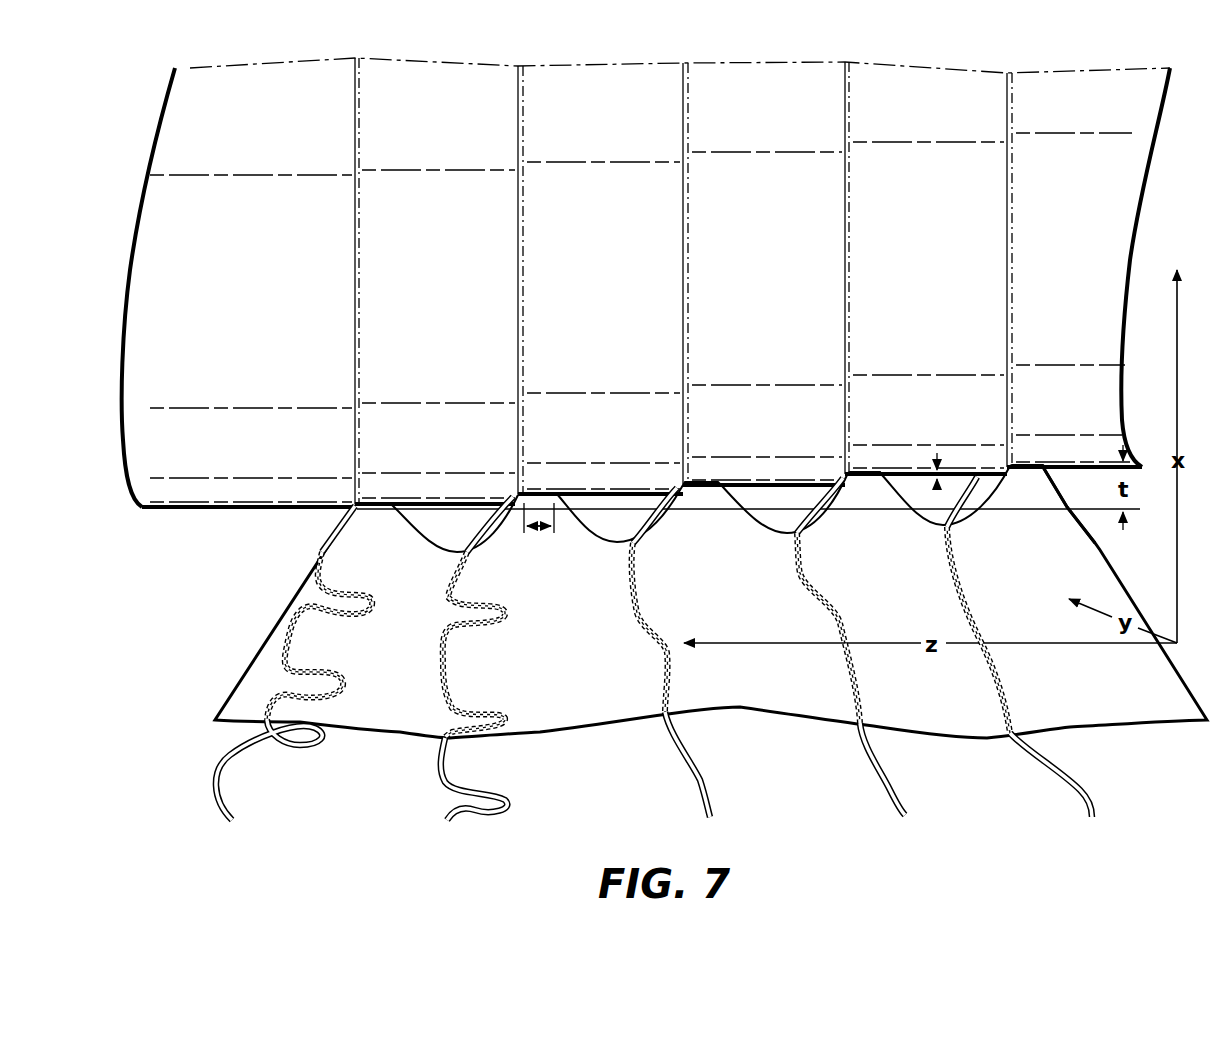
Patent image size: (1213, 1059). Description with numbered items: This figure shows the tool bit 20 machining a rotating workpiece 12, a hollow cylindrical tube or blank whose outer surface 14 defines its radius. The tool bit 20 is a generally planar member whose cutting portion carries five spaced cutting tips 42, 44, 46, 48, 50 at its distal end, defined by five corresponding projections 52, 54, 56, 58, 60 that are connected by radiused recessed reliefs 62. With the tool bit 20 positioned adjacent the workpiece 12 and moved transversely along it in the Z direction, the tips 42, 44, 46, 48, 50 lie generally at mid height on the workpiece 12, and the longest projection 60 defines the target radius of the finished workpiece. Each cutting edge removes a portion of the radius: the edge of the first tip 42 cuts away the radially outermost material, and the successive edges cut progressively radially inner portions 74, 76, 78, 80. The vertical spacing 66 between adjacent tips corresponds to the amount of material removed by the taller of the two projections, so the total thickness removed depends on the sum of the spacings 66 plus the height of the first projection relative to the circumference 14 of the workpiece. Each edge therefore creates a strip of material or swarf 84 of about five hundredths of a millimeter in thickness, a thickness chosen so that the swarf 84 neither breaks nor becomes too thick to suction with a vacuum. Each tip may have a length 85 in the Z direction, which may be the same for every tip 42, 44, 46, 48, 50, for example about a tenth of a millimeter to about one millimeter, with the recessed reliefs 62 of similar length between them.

The workpiece 12 is at (646, 304).
The outer surface 14 is at (217, 513).
The tool bit 20 is at (696, 570).
The first cutting tip 42 is at (383, 499).
The second cutting tip 44 is at (540, 492).
The third cutting tip 46 is at (707, 482).
The fourth cutting tip 48 is at (867, 472).
The fifth cutting tip 50 is at (1028, 463).
The first projection 52 is at (408, 540).
The second projection 54 is at (577, 538).
The third projection 56 is at (718, 500).
The fourth projection 58 is at (857, 493).
The longest projection 60 is at (1042, 480).
The recessed reliefs 62 is at (757, 527).
The spacing 66 is at (933, 471).
The radially inner portion 74 is at (350, 460).
The radially inner portion 76 is at (680, 443).
The radially inner portion 78 is at (841, 433).
The radially inner portion 80 is at (1003, 427).
The swarf 84 is at (222, 760).
The tip length 85 is at (544, 497).